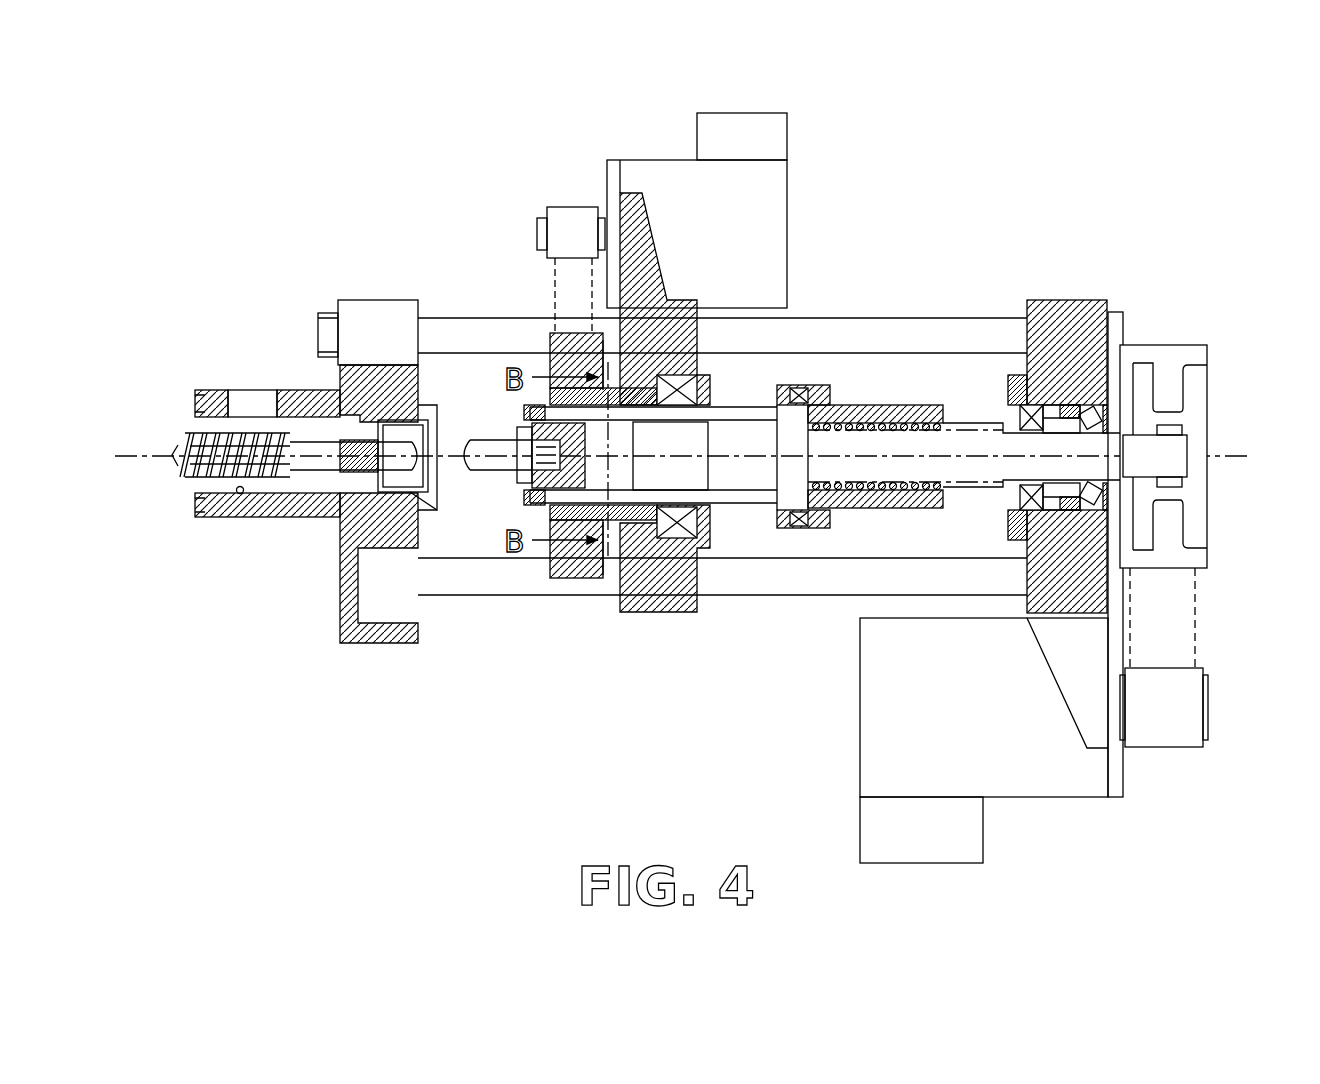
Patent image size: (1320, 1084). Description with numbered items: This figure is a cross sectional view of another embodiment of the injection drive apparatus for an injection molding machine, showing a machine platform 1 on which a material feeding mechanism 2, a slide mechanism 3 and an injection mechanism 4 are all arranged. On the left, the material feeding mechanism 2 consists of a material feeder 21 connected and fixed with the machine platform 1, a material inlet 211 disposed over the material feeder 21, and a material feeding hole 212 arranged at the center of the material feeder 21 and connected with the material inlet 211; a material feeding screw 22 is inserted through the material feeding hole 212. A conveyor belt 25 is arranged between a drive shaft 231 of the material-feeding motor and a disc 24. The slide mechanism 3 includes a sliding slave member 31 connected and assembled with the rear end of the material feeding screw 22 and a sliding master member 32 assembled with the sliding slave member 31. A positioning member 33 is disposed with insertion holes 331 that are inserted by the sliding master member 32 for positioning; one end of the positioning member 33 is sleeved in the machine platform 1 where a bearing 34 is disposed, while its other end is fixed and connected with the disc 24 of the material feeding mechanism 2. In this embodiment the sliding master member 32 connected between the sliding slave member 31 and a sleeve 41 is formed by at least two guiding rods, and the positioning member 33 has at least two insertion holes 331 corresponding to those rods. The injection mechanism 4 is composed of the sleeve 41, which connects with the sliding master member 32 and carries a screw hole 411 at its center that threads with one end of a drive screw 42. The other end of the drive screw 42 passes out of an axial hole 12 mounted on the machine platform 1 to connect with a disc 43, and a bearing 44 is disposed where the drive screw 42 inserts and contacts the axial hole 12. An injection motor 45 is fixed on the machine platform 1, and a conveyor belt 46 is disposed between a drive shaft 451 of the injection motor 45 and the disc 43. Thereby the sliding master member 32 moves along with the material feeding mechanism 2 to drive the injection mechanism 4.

The machine platform 1 is at (789, 573).
The material feeding mechanism 2 is at (278, 423).
The material feeder 21 is at (323, 395).
The material inlet 211 is at (246, 403).
The material feeding hole 212 is at (238, 493).
The material feeding screw 22 is at (188, 433).
The drive shaft 231 is at (570, 215).
The disc 24 is at (555, 340).
The conveyor belt 25 is at (567, 300).
The slide mechanism 3 is at (641, 506).
The sliding slave member 31 is at (520, 500).
The sliding master member 32 is at (592, 498).
The positioning member 33 is at (680, 533).
The insertion hole 331 is at (645, 503).
The bearing 34 is at (719, 557).
The injection mechanism 4 is at (1052, 535).
The sleeve 41 is at (896, 430).
The screw hole 411 is at (912, 407).
The drive screw 42 is at (977, 443).
The axial hole 12 is at (1060, 410).
The bearing 44 is at (1103, 407).
The disc 43 is at (1233, 340).
The injection motor 45 is at (1018, 780).
The drive shaft 451 is at (1165, 725).
The conveyor belt 46 is at (1177, 638).